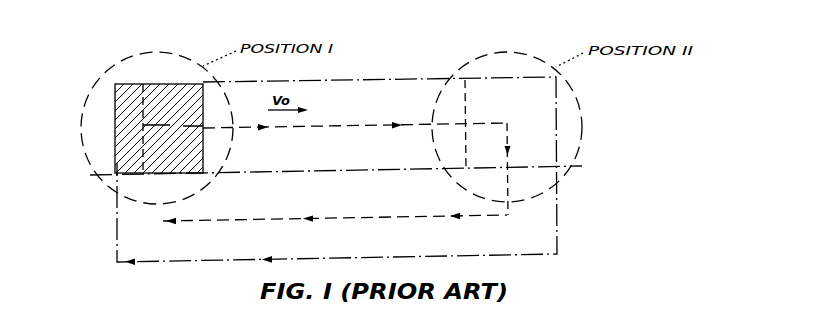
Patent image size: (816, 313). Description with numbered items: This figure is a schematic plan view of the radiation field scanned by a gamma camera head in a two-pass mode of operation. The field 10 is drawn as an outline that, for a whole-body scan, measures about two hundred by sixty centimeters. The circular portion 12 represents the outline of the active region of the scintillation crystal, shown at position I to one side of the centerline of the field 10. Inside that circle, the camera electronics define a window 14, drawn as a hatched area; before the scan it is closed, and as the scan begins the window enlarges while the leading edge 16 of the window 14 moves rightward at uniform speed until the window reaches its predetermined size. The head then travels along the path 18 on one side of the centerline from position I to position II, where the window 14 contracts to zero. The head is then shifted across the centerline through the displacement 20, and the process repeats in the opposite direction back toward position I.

The field outline 10 is at (560, 248).
The circular portion 12 is at (107, 68).
The window 14 is at (117, 176).
The leading edge of the window 16 is at (147, 82).
The path 18 is at (365, 120).
The displacement 20 is at (508, 175).